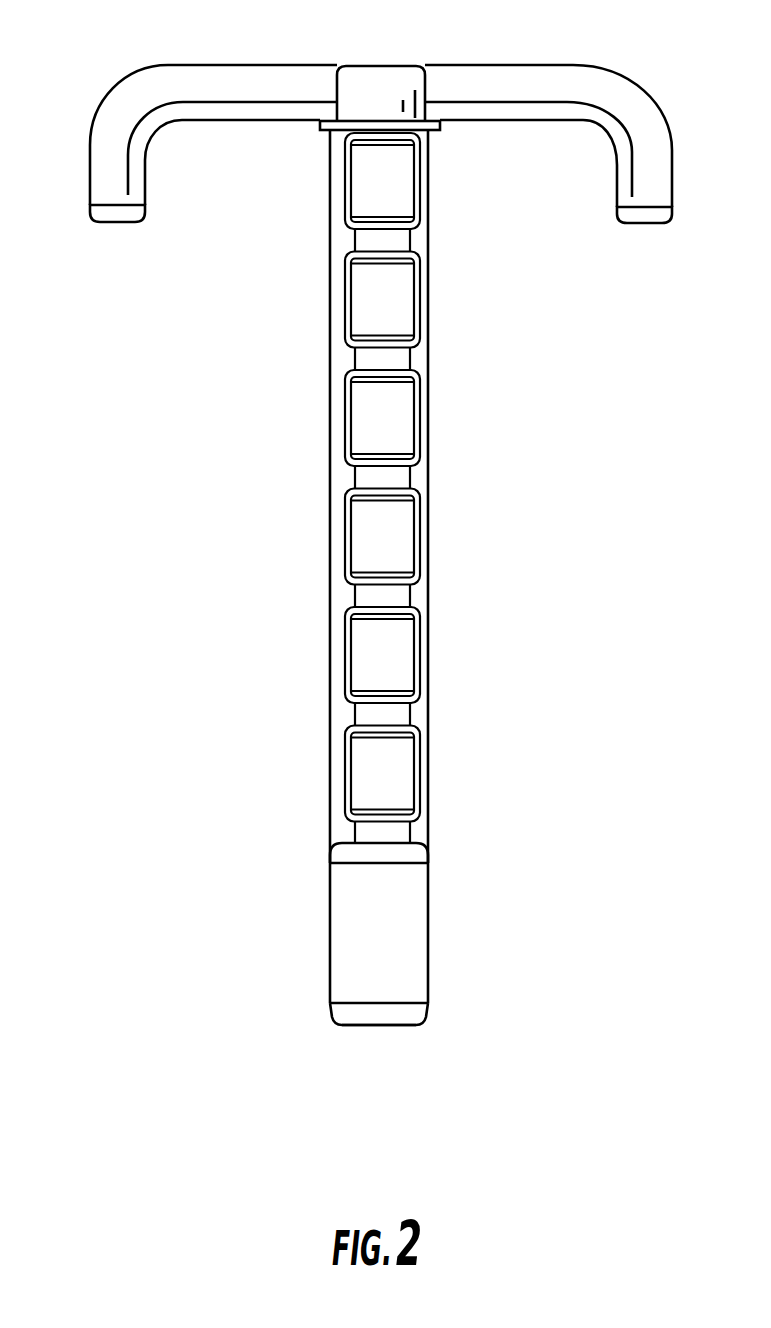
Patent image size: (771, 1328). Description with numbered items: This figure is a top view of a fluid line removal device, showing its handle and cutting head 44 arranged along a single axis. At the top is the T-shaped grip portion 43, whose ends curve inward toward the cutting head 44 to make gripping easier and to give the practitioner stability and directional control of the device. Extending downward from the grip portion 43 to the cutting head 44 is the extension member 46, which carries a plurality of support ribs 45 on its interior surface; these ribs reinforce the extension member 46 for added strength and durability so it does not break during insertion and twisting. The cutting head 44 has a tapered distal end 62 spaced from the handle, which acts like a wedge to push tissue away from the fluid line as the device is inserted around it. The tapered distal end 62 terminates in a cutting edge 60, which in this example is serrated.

The grip portion 43 is at (208, 74).
The cutting head 44 is at (412, 924).
The support ribs 45 is at (400, 712).
The extension member 46 is at (360, 655).
The cutting edge 60 is at (400, 1034).
The tapered distal end 62 is at (318, 1012).